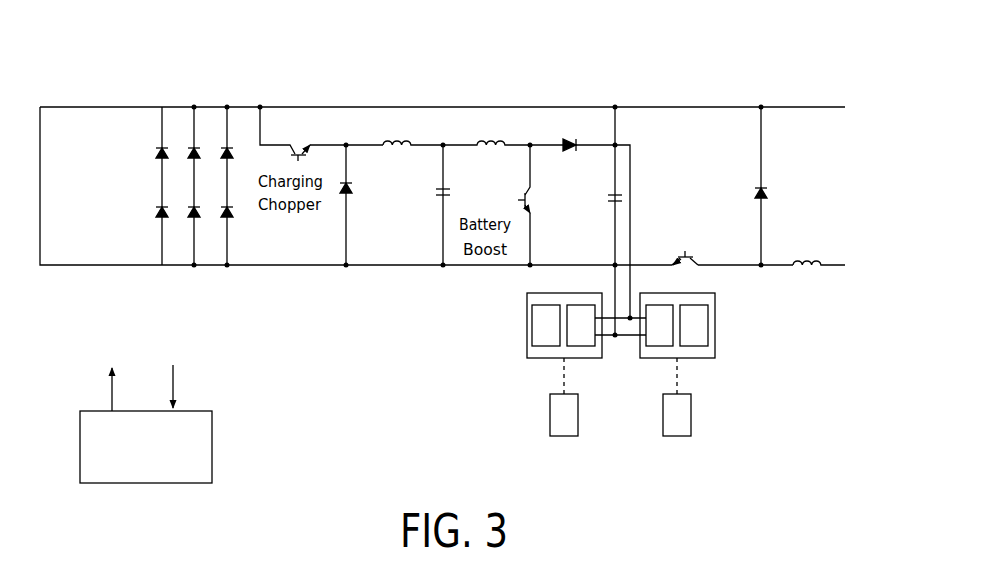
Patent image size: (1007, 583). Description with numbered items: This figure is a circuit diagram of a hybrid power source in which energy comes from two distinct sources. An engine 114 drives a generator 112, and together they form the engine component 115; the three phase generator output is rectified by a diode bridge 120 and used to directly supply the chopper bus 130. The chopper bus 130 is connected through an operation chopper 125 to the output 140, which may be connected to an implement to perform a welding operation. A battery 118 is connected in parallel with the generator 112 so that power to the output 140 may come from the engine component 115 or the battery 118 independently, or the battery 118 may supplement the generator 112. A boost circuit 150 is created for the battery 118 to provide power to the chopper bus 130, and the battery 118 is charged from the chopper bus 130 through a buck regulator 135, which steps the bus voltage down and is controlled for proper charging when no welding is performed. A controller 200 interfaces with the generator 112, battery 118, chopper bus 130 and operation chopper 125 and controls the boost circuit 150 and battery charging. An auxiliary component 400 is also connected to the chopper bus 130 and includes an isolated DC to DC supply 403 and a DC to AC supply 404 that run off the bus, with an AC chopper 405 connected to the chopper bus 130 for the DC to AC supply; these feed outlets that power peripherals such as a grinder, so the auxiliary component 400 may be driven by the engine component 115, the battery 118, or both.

The generator 112 is at (220, 107).
The engine 114 is at (133, 107).
The engine component 115 is at (105, 97).
The battery 118 is at (388, 225).
The diode bridge 120 is at (233, 223).
The operation chopper 125 is at (698, 190).
The chopper bus 130 is at (549, 105).
The buck regulator 135 is at (582, 135).
The output 140 is at (792, 105).
The boost circuit 150 is at (495, 133).
The controller 200 is at (134, 462).
The auxiliary component 400 is at (527, 367).
The isolated DC to DC supply 403 is at (527, 319).
The DC to AC supply 404 is at (703, 344).
The AC chopper 405 is at (663, 348).